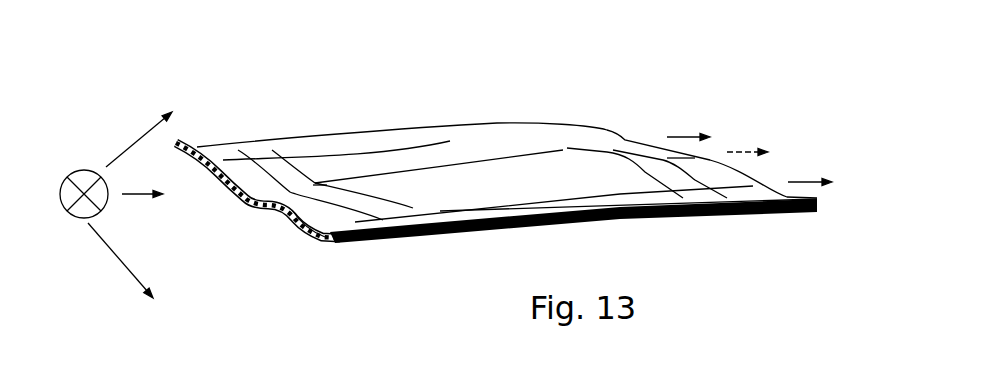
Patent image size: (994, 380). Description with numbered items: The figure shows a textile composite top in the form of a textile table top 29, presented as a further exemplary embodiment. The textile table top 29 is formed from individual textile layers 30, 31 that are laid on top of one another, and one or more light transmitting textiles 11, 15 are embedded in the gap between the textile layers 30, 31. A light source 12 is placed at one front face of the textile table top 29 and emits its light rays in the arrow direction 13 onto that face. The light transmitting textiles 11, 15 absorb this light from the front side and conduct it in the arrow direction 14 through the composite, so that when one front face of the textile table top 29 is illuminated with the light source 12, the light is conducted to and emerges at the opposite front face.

The light transmitting textile 11 is at (258, 203).
The light source 12 is at (72, 193).
The arrow direction 13 is at (110, 253).
The arrow direction 14 is at (677, 135).
The light transmitting textile 15 is at (207, 163).
The textile table top 29 is at (496, 175).
The textile layer 30 is at (180, 139).
The textile layer 31 is at (297, 224).